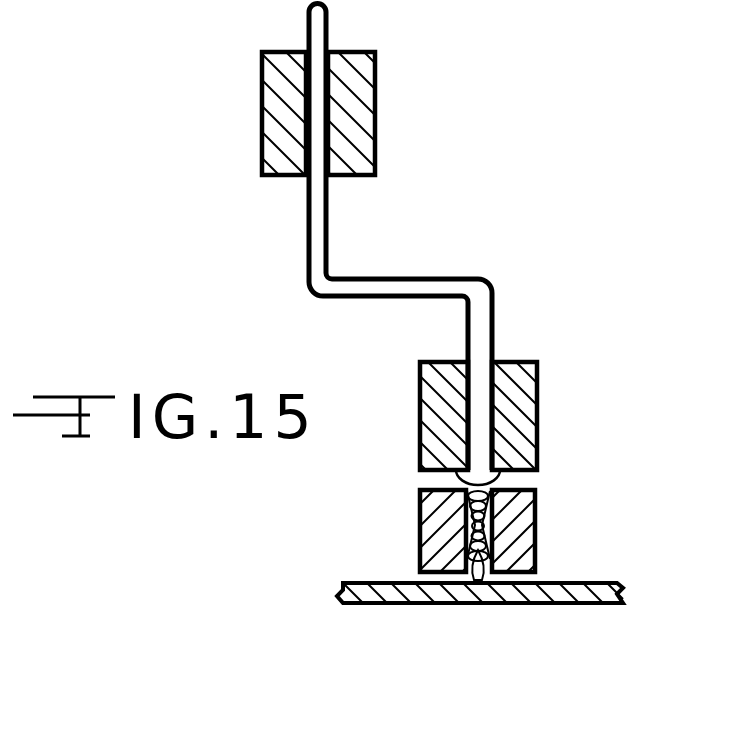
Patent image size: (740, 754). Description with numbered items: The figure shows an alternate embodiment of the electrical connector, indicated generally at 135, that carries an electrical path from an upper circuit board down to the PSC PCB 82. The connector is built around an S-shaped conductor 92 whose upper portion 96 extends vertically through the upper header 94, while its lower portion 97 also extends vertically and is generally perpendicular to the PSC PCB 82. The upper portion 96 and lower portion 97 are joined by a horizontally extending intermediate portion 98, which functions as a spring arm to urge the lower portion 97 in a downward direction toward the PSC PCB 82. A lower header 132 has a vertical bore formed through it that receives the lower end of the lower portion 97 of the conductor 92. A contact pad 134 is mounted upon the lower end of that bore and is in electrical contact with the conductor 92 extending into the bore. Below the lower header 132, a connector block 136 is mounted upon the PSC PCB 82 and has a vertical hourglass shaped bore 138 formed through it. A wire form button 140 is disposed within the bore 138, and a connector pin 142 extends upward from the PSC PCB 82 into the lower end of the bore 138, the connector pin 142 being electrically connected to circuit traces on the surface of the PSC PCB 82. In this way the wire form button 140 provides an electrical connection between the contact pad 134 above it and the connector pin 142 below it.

The PSC PCB 82 is at (572, 605).
The conductor 92 is at (403, 237).
The upper header 94 is at (360, 84).
The upper portion 96 is at (328, 216).
The lower portion 97 is at (480, 317).
The intermediate portion 98 is at (412, 278).
The lower header 132 is at (522, 418).
The contact pad 134 is at (500, 483).
The electrical connector 135 is at (508, 158).
The connector block 136 is at (445, 523).
The hourglass shaped bore 138 is at (423, 490).
The wire form button 140 is at (500, 518).
The connector pin 142 is at (480, 605).